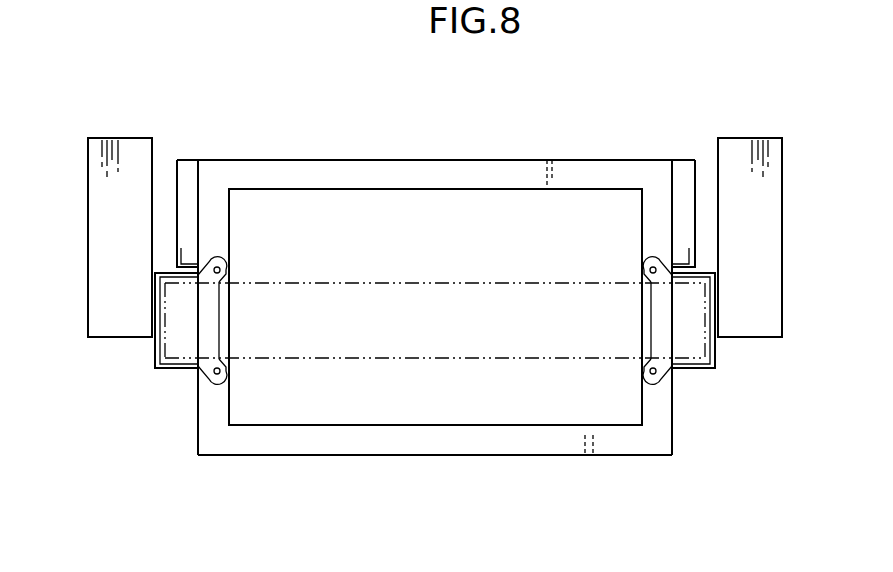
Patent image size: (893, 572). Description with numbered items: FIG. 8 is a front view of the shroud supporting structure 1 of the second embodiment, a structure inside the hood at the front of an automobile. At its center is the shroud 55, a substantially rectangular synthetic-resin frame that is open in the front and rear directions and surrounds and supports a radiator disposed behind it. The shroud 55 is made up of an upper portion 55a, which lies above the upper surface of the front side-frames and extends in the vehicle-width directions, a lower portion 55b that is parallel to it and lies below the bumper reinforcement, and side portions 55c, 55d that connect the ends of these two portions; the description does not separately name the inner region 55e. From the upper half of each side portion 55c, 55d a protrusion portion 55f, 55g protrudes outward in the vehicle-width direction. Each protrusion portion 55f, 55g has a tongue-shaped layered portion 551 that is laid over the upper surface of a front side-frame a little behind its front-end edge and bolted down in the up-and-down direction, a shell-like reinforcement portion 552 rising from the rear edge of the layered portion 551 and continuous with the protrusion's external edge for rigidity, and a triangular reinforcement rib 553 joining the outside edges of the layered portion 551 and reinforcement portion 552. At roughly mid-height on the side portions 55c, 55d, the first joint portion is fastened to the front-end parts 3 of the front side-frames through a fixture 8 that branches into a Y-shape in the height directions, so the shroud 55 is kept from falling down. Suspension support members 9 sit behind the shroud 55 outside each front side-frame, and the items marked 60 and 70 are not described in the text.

The shroud supporting structure 1 is at (613, 99).
The front-end part 3 is at (178, 370).
The fixture 8 is at (175, 338).
The suspension support member 9 is at (130, 137).
The shroud 55 is at (457, 146).
The upper portion 55a is at (377, 160).
The lower portion 55b is at (398, 457).
The side portion 55c is at (658, 424).
The side portion 55d is at (210, 438).
The opening of frame 55e is at (293, 195).
The protrusion portion 55f is at (682, 189).
The protrusion portion 55g is at (187, 189).
The engagement portion 60 is at (712, 272).
The engagement portion 70 is at (157, 272).
The layered portion 551 is at (190, 265).
The reinforcement portion 552 is at (183, 213).
The reinforcement rib 553 is at (178, 263).